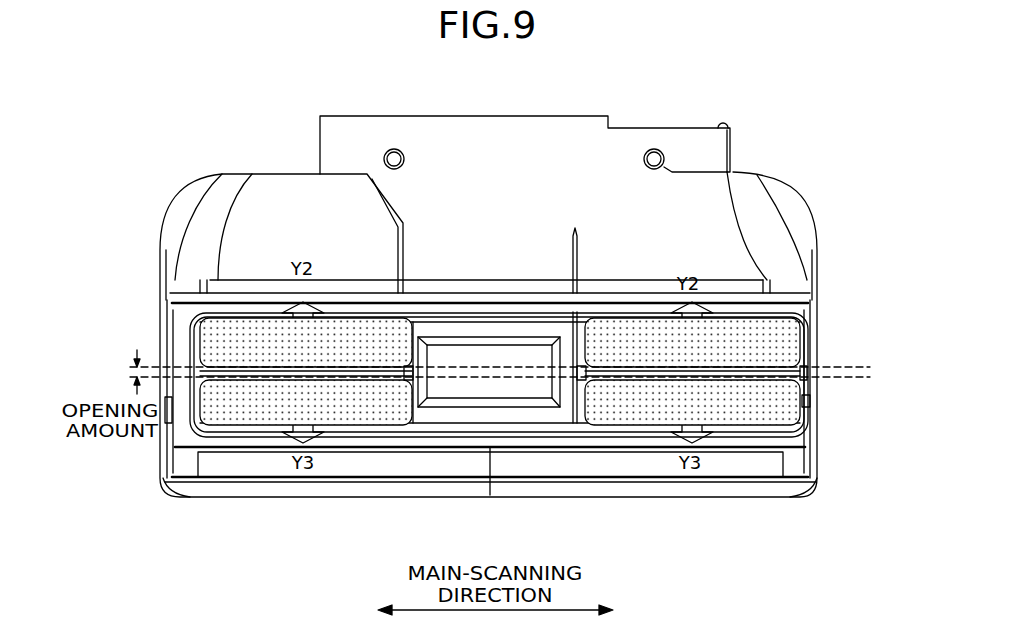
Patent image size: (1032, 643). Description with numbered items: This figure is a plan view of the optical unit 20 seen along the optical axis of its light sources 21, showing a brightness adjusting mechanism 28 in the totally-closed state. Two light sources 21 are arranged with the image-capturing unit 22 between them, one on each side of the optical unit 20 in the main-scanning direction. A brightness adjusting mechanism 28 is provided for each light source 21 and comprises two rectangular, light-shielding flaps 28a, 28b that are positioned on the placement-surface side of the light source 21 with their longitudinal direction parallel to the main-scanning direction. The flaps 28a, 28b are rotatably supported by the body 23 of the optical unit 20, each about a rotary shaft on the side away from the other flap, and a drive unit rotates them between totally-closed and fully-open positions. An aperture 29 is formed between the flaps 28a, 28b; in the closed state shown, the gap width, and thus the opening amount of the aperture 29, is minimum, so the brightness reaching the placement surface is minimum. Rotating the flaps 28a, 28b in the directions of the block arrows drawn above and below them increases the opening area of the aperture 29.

The optical unit 20 is at (488, 306).
The light source 21 is at (262, 376).
The image-capturing unit 22 is at (490, 334).
The body 23 is at (427, 450).
The brightness adjusting mechanism 28 is at (93, 290).
The flap 28a is at (194, 340).
The flap 28b is at (194, 400).
The aperture 29 is at (408, 372).